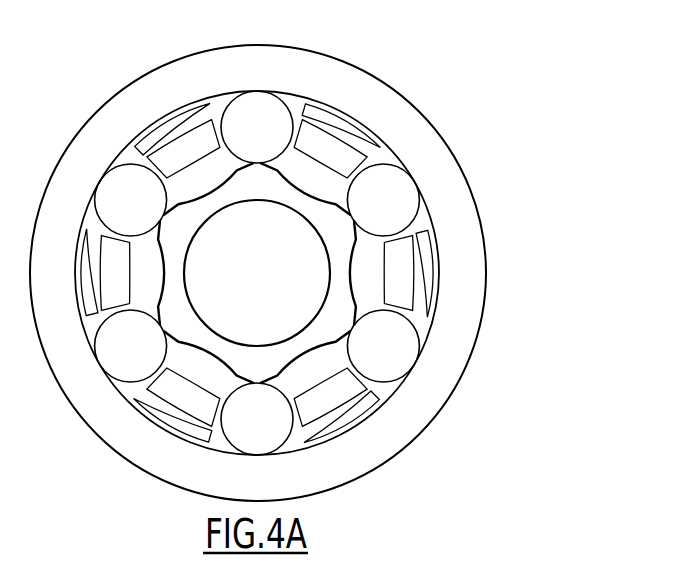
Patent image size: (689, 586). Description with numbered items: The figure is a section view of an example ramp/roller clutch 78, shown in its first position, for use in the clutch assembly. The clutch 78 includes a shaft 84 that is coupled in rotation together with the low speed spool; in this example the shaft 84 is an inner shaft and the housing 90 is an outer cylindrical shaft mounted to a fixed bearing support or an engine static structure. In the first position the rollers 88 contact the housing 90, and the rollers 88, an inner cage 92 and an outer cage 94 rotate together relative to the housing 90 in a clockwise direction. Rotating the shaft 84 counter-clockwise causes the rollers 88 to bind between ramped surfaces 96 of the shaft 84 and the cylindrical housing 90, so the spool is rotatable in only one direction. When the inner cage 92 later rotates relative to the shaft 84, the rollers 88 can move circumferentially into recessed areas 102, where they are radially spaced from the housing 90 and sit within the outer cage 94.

The ramp/roller clutch 78 is at (486, 69).
The shaft 84 is at (336, 231).
The rollers 88 is at (393, 355).
The housing 90 is at (457, 268).
The inner cage 92 is at (403, 285).
The outer cage 94 is at (338, 122).
The ramped surfaces 96 is at (357, 325).
The recessed areas 102 is at (303, 354).